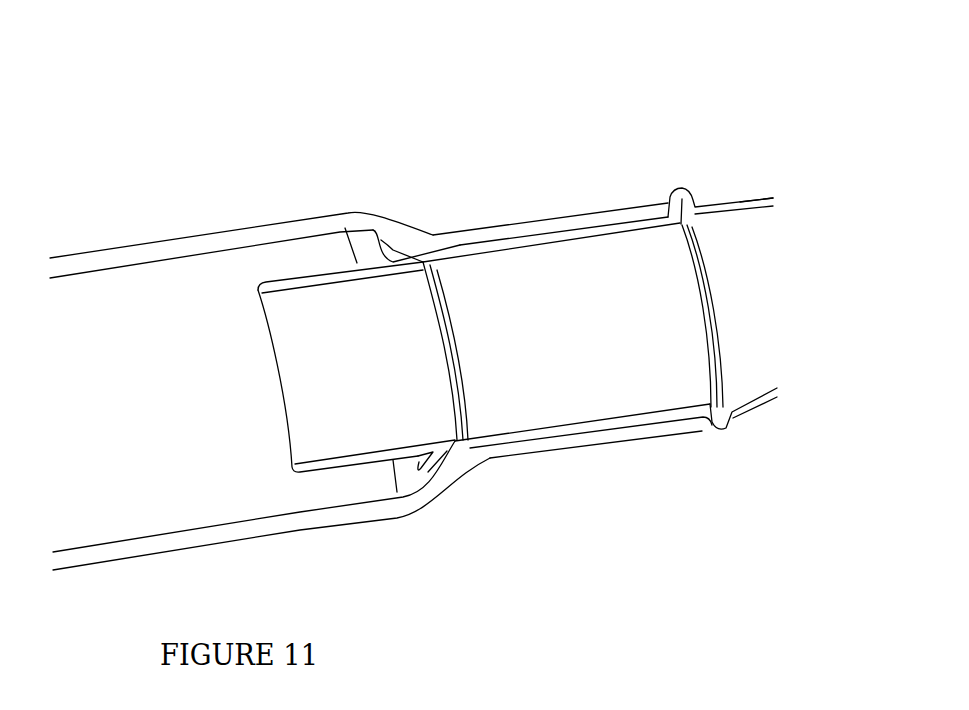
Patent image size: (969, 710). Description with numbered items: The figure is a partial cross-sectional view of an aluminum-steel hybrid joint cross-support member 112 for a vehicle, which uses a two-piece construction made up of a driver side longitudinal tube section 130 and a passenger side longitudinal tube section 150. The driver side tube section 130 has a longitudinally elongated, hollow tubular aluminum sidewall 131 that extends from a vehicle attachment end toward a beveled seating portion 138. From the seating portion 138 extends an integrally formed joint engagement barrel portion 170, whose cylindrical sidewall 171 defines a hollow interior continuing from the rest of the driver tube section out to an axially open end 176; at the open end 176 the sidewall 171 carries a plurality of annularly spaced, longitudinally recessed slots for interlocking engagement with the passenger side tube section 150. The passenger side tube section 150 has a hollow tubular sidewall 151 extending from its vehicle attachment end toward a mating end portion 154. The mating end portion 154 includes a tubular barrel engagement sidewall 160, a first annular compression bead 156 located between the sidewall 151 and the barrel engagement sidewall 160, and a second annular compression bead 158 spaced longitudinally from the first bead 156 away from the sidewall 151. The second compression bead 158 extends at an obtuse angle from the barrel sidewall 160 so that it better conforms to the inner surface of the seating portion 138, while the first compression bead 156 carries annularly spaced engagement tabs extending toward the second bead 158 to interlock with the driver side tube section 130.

The joint cross-support member 112 is at (533, 100).
The driver side longitudinal tube section 130 is at (217, 230).
The hollow tubular aluminum sidewall 131 is at (322, 515).
The beveled seating portion 138 is at (405, 235).
The passenger side longitudinal tube section 150 is at (721, 200).
The hollow tubular sidewall 151 is at (753, 206).
The mating end portion 154 is at (547, 370).
The first annular compression bead 156 is at (728, 428).
The second annular compression bead 158 is at (446, 450).
The tubular barrel engagement sidewall 160 is at (647, 410).
The joint engagement barrel portion 170 is at (565, 213).
The cylindrical sidewall 171 is at (590, 436).
The axially open end 176 is at (667, 196).